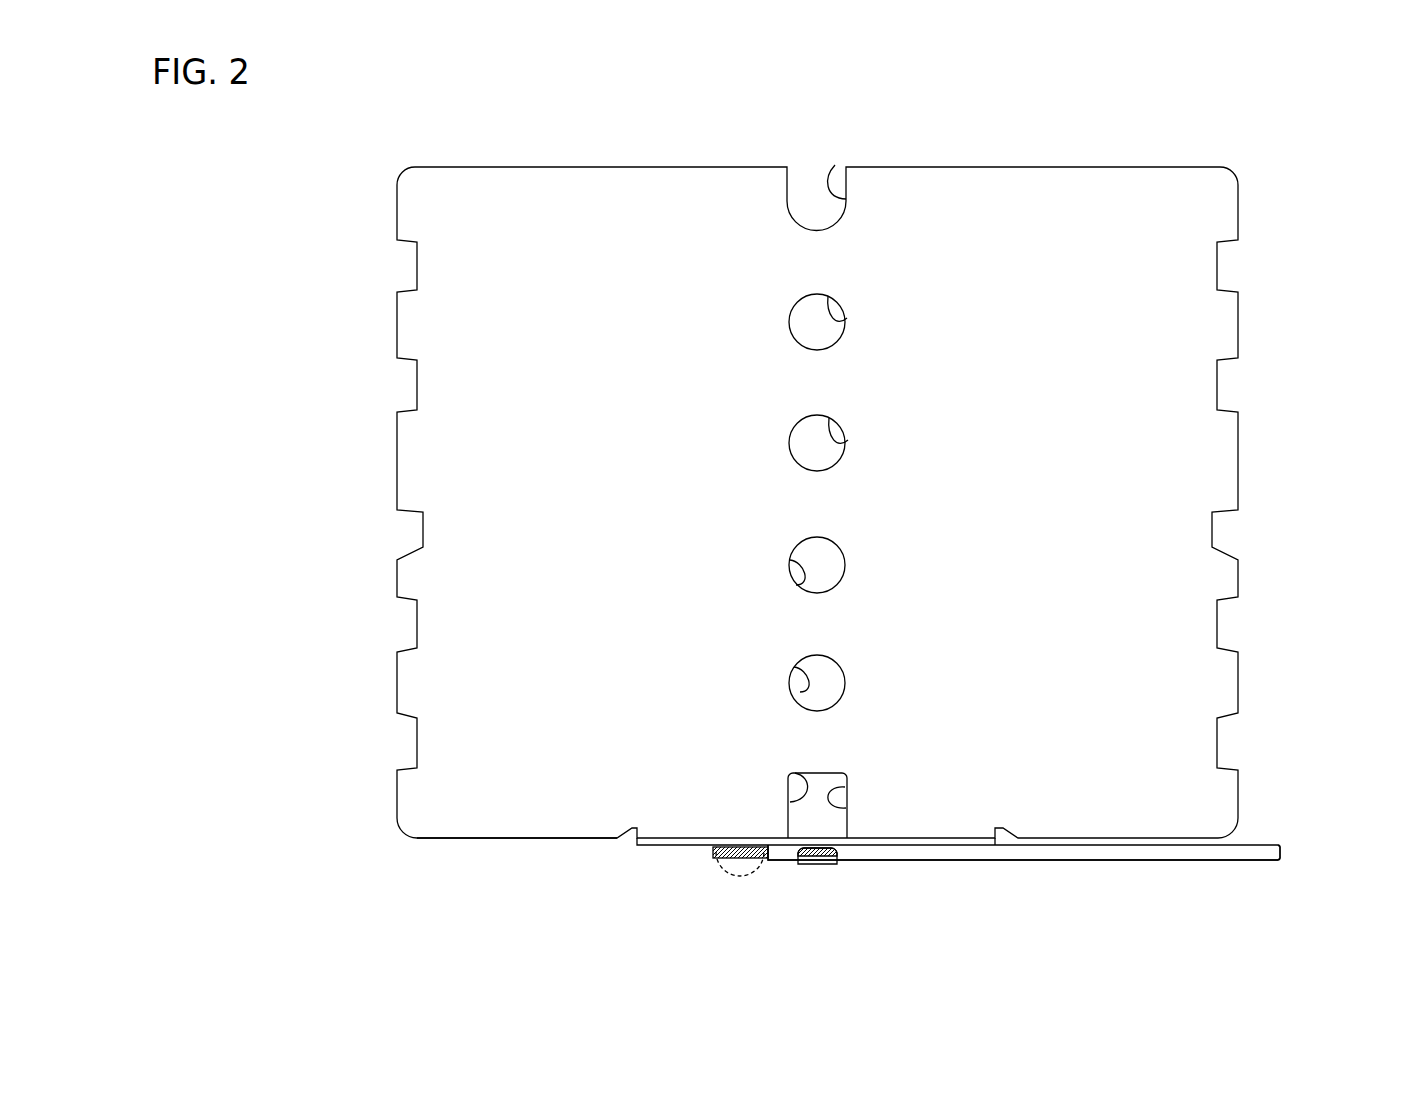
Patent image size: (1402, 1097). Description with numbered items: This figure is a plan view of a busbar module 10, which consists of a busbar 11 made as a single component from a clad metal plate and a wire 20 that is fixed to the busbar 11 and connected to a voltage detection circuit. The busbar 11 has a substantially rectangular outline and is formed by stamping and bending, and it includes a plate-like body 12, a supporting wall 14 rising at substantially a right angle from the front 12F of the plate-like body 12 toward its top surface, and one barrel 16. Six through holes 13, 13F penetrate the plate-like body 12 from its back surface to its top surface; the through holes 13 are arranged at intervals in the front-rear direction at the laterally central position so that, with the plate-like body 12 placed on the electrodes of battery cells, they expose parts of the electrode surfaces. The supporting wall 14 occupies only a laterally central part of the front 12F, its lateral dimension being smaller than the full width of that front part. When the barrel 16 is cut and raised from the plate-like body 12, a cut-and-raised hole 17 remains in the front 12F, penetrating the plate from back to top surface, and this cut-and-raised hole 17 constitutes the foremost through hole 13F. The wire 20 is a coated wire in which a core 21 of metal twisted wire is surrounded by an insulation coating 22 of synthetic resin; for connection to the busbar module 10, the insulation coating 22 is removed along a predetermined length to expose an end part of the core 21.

The busbar module 10 is at (1320, 141).
The busbar 11 is at (340, 317).
The plate-like body 12 is at (1019, 237).
The front 12F is at (519, 838).
The through holes 13 is at (829, 418).
The through hole 13F is at (795, 773).
The supporting wall 14 is at (675, 845).
The barrel 16 is at (819, 866).
The cut-and-raised hole 17 is at (845, 787).
The wire 20 is at (1134, 874).
The core 21 is at (734, 860).
The insulation coating 22 is at (888, 861).